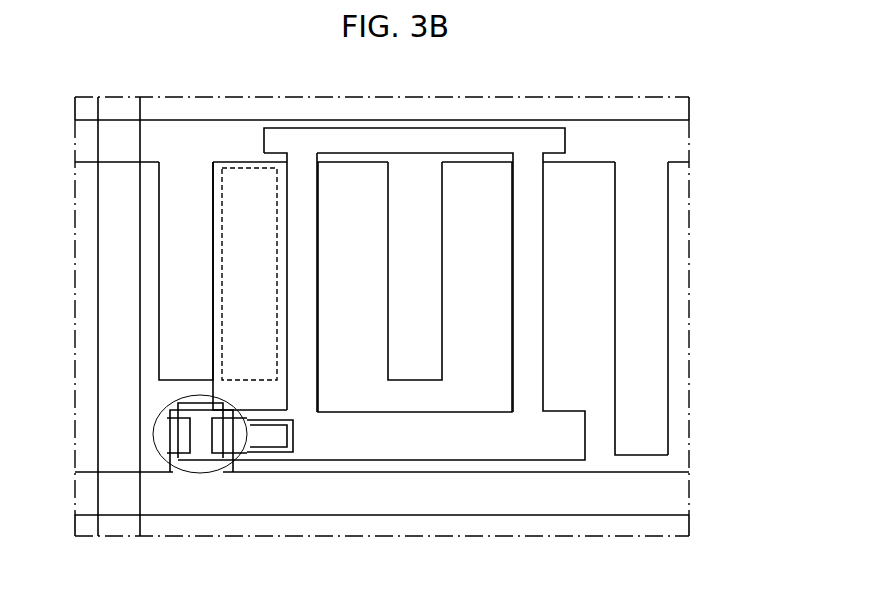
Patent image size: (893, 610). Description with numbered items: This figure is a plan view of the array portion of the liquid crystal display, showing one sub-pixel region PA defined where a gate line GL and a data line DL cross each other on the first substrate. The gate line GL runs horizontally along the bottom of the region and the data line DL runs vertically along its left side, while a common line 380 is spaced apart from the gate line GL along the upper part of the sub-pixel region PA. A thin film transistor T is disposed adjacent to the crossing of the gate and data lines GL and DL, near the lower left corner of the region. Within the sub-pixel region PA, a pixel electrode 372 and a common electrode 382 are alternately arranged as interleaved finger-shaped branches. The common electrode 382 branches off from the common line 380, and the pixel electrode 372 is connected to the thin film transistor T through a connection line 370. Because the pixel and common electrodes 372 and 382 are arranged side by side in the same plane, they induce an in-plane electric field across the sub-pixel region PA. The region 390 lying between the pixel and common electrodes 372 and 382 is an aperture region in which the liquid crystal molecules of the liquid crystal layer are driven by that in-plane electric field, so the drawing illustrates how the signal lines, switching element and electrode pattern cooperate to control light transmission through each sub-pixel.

The connection line 370 is at (472, 420).
The pixel electrode 372 is at (303, 403).
The common line 380 is at (680, 140).
The common electrode 382 is at (187, 178).
The region 390 is at (222, 250).
The thin film transistor T is at (193, 475).
The gate line GL is at (418, 503).
The data line DL is at (108, 356).
The sub-pixel region PA is at (600, 455).